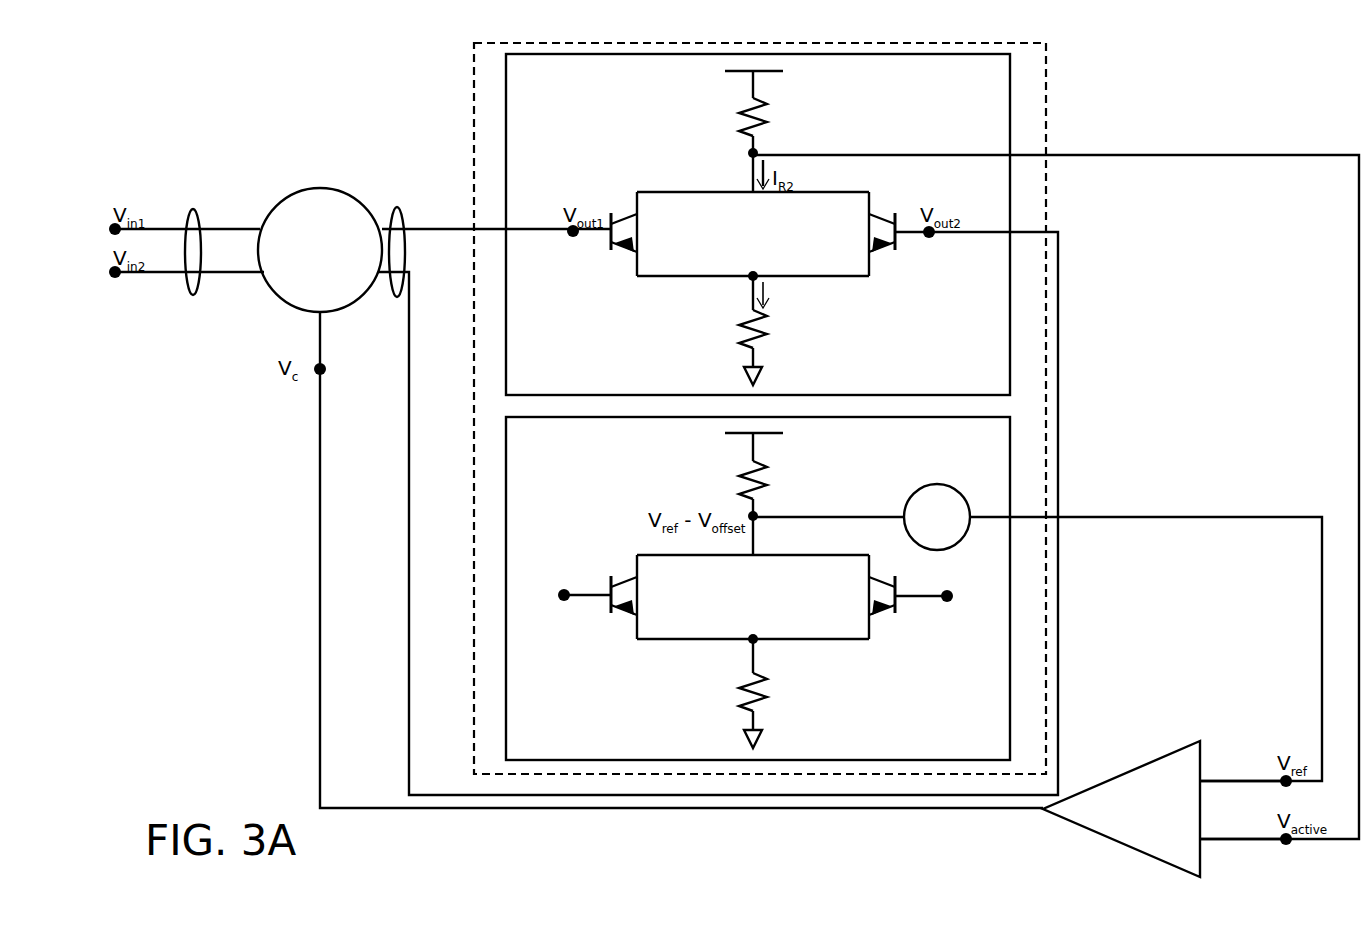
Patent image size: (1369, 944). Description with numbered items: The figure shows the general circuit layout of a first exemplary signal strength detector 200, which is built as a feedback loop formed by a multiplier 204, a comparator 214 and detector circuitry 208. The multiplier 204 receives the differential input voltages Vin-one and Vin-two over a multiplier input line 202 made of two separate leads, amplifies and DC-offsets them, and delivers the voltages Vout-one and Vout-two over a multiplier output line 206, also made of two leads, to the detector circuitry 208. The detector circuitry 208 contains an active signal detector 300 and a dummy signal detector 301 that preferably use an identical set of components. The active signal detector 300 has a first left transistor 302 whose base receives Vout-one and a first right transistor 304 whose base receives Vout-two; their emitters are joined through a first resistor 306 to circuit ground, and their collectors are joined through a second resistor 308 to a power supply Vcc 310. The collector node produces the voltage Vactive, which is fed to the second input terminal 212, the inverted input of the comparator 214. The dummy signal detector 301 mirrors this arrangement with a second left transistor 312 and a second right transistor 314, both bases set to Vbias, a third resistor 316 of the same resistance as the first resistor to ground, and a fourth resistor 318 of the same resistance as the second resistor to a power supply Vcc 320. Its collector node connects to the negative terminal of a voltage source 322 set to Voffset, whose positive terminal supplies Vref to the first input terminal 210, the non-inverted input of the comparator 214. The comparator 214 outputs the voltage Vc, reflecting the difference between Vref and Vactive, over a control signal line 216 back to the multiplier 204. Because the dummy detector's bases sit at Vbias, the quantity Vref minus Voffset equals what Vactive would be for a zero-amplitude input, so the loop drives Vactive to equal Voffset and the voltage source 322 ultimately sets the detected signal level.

The signal strength detector 200 is at (1275, 141).
The multiplier input line 202 is at (193, 202).
The multiplier 204 is at (318, 188).
The multiplier output line 206 is at (397, 206).
The detector circuitry 208 is at (1068, 107).
The first input terminal 210 is at (1230, 766).
The second input terminal 212 is at (1212, 845).
The comparator 214 is at (1080, 835).
The control signal line 216 is at (330, 796).
The active signal detector 300 is at (580, 101).
The dummy signal detector 301 is at (578, 461).
The first left transistor 302 is at (625, 258).
The first right transistor 304 is at (880, 258).
The first resistor 306 is at (694, 331).
The second resistor 308 is at (692, 118).
The power supply Vcc 310 is at (838, 88).
The second left transistor 312 is at (625, 620).
The second right transistor 314 is at (897, 618).
The third resistor 316 is at (694, 694).
The fourth resistor 318 is at (692, 480).
The power supply Vcc 320 is at (843, 452).
The voltage source 322 is at (955, 480).